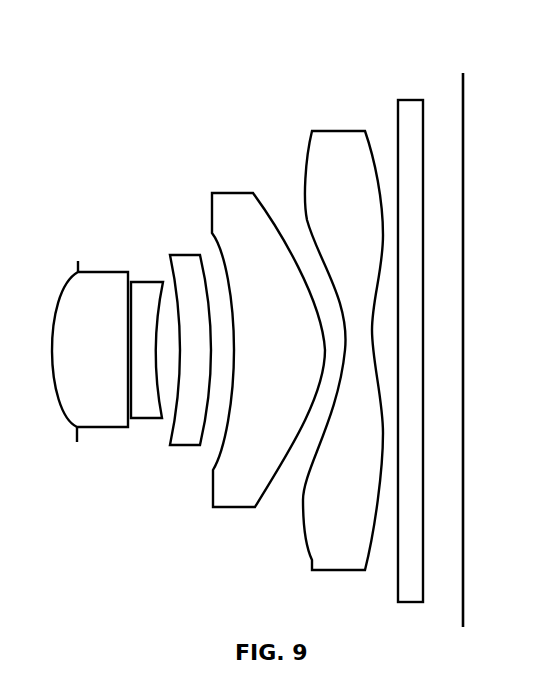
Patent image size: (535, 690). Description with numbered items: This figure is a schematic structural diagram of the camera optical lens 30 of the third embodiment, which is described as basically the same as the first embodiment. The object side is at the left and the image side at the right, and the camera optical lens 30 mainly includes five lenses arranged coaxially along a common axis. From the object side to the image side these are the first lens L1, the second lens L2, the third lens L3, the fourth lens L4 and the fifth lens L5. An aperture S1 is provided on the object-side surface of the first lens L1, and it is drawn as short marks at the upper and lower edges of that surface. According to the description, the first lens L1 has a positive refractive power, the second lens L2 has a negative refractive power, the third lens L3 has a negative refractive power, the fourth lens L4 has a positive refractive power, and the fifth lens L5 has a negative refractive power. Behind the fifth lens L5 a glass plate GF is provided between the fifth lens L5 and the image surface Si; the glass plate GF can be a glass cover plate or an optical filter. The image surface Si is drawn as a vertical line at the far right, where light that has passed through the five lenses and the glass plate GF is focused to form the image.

The camera optical lens 30 is at (240, 31).
The aperture S1 is at (57, 351).
The first lens L1 is at (90, 333).
The second lens L2 is at (147, 336).
The third lens L3 is at (190, 334).
The fourth lens L4 is at (268, 336).
The fifth lens L5 is at (343, 335).
The glass plate GF is at (409, 335).
The image surface Si is at (464, 331).